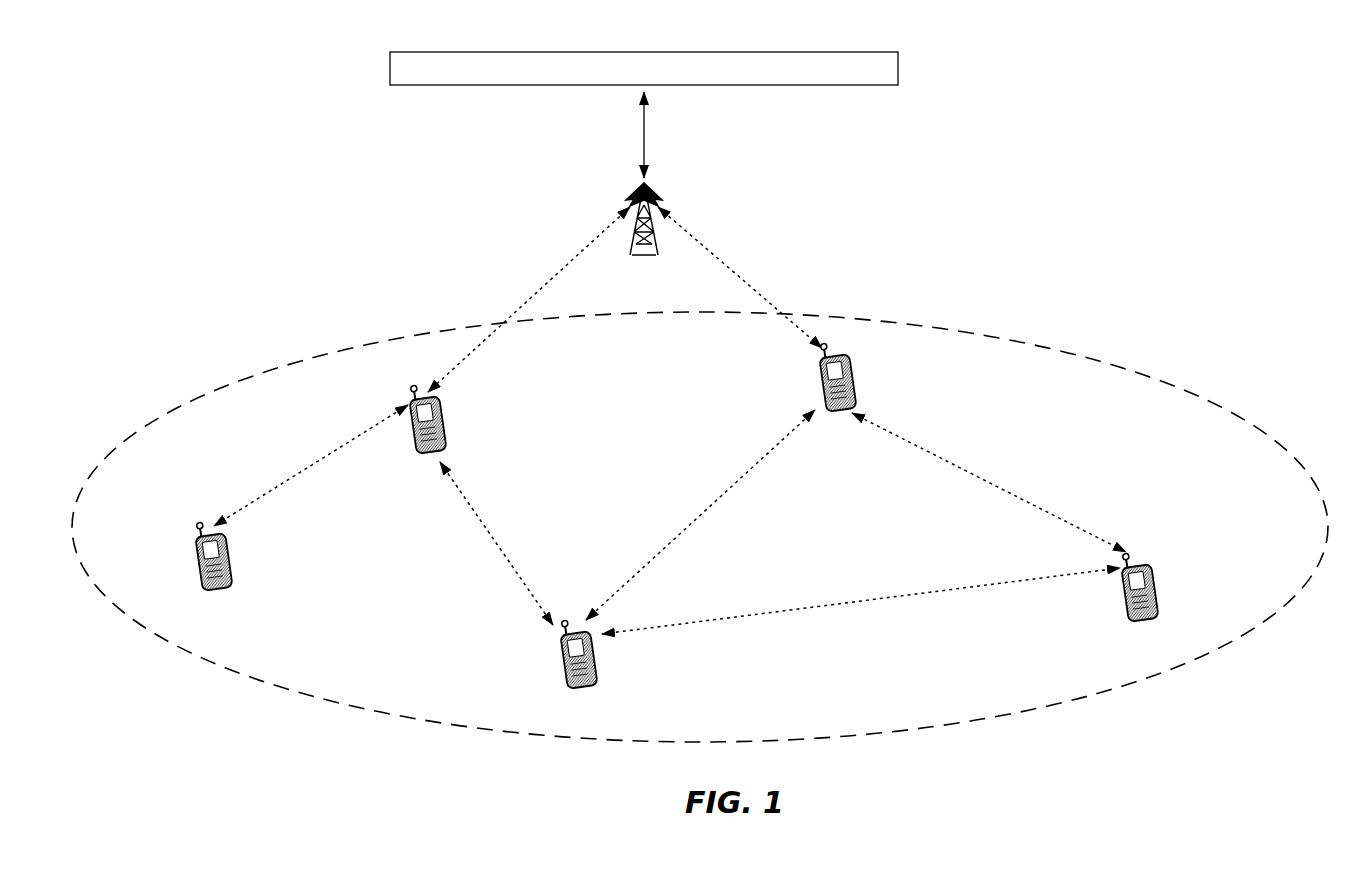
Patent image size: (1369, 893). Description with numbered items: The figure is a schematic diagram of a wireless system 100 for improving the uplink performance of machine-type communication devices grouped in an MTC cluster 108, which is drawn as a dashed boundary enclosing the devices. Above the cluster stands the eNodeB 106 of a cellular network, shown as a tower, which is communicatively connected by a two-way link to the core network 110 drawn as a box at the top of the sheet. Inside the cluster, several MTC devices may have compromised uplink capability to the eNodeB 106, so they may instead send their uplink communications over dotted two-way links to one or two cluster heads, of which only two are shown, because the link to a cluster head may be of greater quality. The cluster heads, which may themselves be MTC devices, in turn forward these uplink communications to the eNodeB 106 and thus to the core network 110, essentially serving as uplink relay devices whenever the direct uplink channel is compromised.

The system 100 is at (700, 397).
The eNodeB 106 is at (649, 236).
The MTC cluster 108 is at (1084, 346).
The core network 110 is at (644, 68).